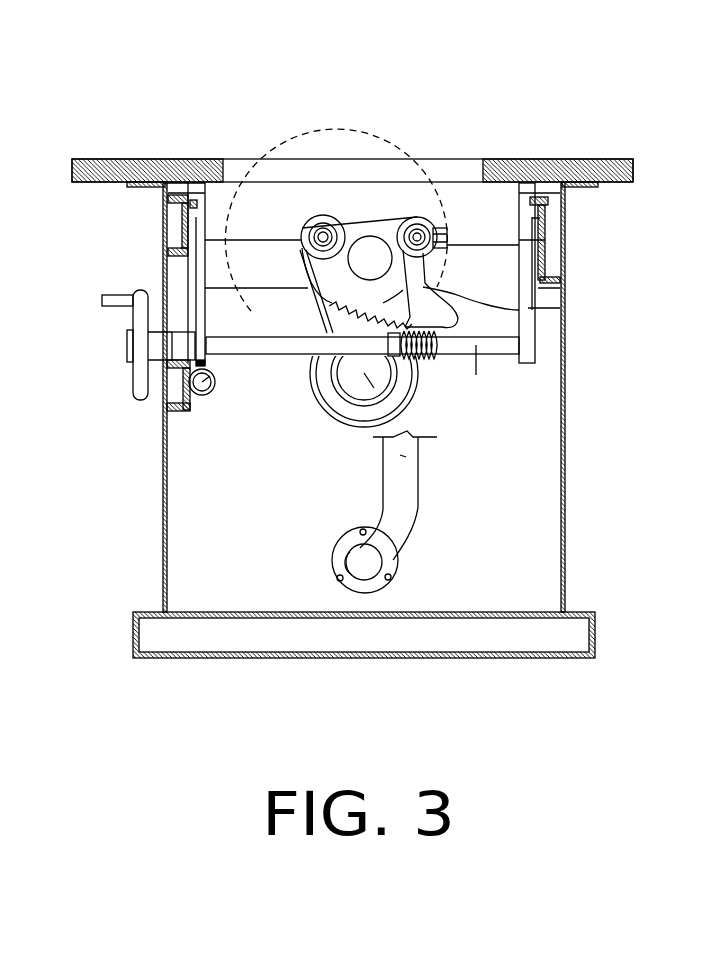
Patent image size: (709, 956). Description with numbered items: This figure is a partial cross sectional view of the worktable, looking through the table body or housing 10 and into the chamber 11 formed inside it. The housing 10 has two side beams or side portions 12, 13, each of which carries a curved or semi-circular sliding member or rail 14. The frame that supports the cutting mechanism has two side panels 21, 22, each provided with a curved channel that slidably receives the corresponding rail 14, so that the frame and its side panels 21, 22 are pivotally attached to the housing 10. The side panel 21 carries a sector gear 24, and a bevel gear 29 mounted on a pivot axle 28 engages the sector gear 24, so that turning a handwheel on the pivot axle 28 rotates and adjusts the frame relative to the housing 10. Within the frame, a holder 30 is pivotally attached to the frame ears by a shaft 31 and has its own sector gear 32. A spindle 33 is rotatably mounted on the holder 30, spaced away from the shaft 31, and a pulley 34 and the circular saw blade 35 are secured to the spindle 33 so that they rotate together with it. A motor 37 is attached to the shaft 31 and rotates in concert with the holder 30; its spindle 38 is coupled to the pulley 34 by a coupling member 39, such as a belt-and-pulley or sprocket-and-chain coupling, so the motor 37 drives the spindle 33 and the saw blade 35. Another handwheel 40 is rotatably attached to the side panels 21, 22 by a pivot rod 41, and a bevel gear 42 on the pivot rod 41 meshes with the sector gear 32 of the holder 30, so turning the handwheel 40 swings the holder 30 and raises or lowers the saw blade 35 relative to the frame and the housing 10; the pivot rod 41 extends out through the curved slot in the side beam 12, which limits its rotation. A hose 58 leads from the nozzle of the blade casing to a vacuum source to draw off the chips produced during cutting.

The housing 10 is at (160, 494).
The chamber 11 is at (168, 578).
The side beam 12 is at (160, 214).
The side beam 13 is at (563, 192).
The rail 14 is at (185, 188).
The side panel 21 is at (190, 327).
The side panel 22 is at (528, 310).
The sector gear 24 is at (178, 372).
The pivot axle 28 is at (180, 378).
The bevel gear 29 is at (203, 398).
The holder 30 is at (378, 213).
The shaft 31 is at (420, 215).
The sector gear 32 is at (310, 318).
The spindle 33 is at (300, 222).
The pulley 34 is at (323, 212).
The saw blade 35 is at (352, 150).
The motor 37 is at (342, 402).
The spindle 38 is at (373, 368).
The coupling member 39 is at (333, 362).
The handwheel 40 is at (140, 322).
The pivot rod 41 is at (476, 375).
The bevel gear 42 is at (433, 362).
The hose 58 is at (403, 455).